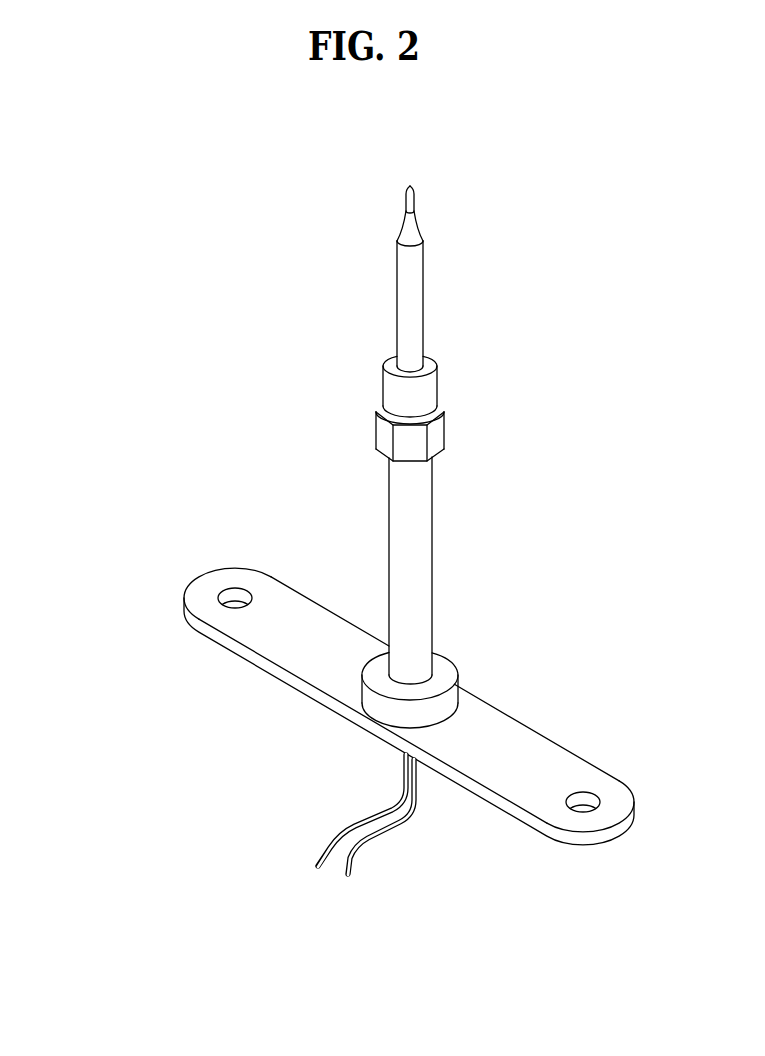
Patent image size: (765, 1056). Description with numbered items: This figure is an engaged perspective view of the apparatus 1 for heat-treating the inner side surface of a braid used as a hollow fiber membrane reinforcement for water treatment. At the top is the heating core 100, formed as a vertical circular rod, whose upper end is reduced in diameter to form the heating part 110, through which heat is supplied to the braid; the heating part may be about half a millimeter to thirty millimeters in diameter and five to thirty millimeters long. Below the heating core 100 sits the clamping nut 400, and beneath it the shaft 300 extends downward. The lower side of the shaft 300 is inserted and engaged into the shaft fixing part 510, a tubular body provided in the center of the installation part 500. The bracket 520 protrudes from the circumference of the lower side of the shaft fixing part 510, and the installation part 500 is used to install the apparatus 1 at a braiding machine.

The apparatus for heat-treating an inner side surface of a braid 1 is at (57, 145).
The heating core 100 is at (408, 315).
The heating part 110 is at (406, 200).
The shaft 300 is at (408, 500).
The clamping nut 400 is at (400, 406).
The installation part 500 is at (240, 713).
The shaft fixing part 510 is at (453, 660).
The bracket 520 is at (533, 763).